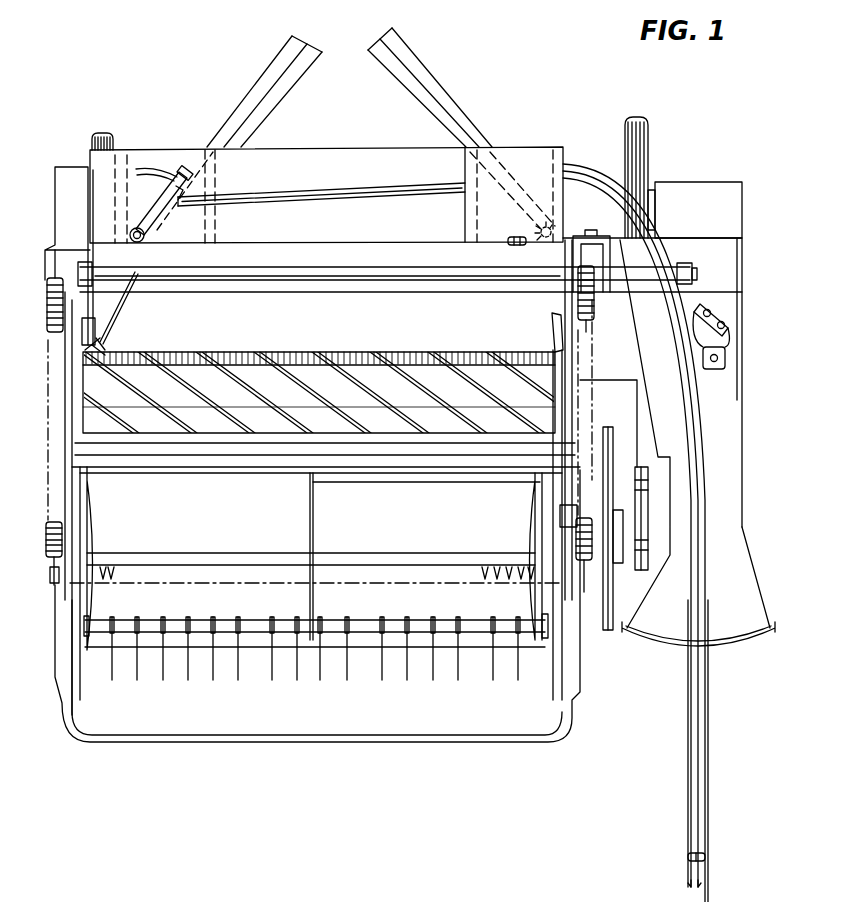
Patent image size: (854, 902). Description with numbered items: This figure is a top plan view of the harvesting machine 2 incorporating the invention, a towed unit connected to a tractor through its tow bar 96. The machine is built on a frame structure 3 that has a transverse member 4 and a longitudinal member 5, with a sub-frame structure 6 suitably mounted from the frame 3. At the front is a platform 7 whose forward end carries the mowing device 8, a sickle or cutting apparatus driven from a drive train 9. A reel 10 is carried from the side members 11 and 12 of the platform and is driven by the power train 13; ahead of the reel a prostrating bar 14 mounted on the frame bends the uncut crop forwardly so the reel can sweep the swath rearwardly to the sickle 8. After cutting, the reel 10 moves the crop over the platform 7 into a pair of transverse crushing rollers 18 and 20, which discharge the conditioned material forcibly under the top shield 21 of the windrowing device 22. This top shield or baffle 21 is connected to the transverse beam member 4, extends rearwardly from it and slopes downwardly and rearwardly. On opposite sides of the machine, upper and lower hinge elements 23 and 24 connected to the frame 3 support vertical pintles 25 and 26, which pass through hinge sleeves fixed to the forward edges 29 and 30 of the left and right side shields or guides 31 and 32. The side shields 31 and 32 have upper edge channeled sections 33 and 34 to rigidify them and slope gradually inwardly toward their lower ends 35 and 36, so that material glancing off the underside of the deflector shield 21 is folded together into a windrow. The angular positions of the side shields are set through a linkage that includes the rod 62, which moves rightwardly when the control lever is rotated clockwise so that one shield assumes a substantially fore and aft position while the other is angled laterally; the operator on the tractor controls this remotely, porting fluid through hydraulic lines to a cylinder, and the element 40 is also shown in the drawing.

The harvesting machine 2 is at (750, 160).
The frame structure 3 is at (727, 258).
The transverse member 4 is at (377, 248).
The longitudinal member 5 is at (733, 457).
The sub-frame structure 6 is at (553, 328).
The platform 7 is at (382, 533).
The mowing device 8 is at (497, 577).
The drive train 9 is at (643, 511).
The reel 10 is at (227, 633).
The side member 11 is at (76, 514).
The side member 12 is at (558, 506).
The power train 13 is at (610, 458).
The prostrating bar 14 is at (295, 735).
The crushing roller 18 is at (330, 385).
The crushing roller 20 is at (403, 353).
The top shield 21 is at (387, 163).
The windrowing device 22 is at (178, 146).
The upper hinge element 23 is at (528, 221).
The lower hinge element 24 is at (145, 240).
The vertical pintle 25 is at (555, 221).
The vertical pintle 26 is at (133, 232).
The forward edge 29 is at (547, 236).
The forward edge 30 is at (140, 241).
The left side shield 31 is at (443, 90).
The right side shield 32 is at (250, 88).
The upper edge channeled section 33 is at (405, 50).
The upper edge channeled section 34 is at (292, 38).
The lower end 35 is at (386, 66).
The lower end 36 is at (293, 90).
The linkage rod 40 is at (294, 186).
The rod 62 is at (413, 193).
The tow bar 96 is at (708, 892).